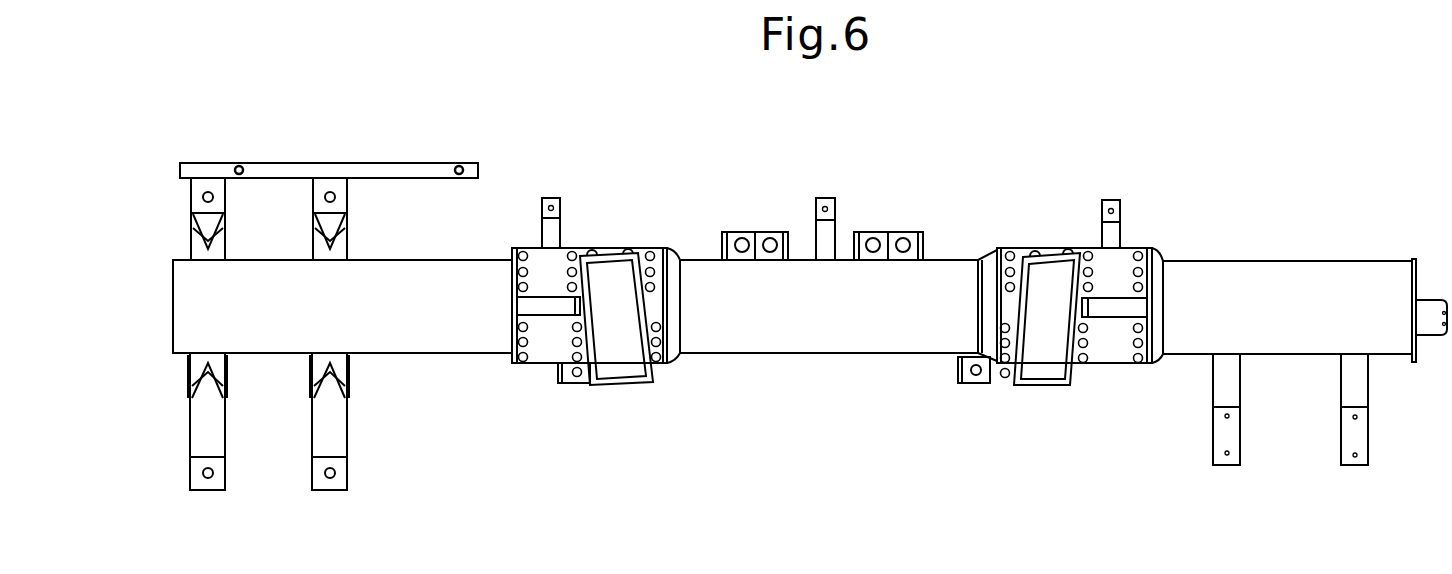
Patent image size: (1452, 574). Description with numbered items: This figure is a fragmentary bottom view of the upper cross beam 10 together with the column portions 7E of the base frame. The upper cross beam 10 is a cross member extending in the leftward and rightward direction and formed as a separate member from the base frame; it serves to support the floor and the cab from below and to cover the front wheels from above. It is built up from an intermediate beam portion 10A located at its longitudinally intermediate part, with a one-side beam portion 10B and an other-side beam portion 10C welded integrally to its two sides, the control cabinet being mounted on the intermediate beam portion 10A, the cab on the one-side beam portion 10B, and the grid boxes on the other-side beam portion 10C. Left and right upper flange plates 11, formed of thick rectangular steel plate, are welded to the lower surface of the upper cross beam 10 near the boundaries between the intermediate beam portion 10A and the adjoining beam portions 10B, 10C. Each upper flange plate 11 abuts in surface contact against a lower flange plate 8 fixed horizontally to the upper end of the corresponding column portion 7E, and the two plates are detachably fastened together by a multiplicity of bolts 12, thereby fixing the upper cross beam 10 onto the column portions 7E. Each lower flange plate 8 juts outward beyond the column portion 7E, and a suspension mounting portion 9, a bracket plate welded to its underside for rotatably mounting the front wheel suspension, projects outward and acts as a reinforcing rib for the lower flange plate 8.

The upper cross beam 10 is at (806, 252).
The intermediate beam portion 10A is at (825, 343).
The one-side beam portion 10B is at (1322, 273).
The other-side beam portion 10C is at (273, 285).
The column portion 7E is at (619, 383).
The lower flange plate 8 is at (553, 274).
The suspension mounting portion 9 is at (550, 314).
The upper flange plate 11 is at (508, 315).
The bolt 12 is at (522, 252).